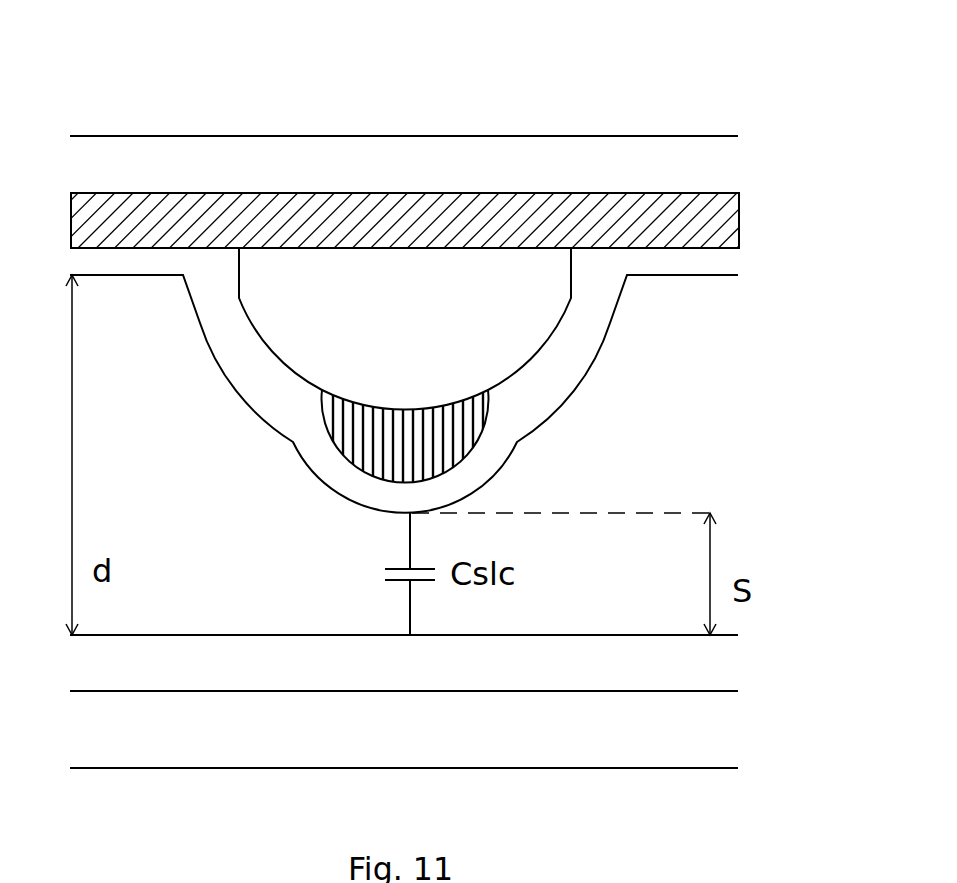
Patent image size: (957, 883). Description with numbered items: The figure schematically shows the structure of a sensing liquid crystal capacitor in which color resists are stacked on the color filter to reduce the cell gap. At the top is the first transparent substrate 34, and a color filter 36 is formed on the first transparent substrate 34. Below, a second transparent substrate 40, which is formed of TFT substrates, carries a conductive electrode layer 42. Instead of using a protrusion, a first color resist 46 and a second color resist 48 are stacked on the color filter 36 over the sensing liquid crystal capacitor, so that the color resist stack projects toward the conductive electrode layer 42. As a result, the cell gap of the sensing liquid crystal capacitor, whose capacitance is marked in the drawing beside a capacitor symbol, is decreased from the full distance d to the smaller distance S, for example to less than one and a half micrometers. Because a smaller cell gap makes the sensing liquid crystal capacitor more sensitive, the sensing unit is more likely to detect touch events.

The first transparent substrate 34 is at (527, 163).
The color filter 36 is at (122, 208).
The second transparent substrate 40 is at (695, 745).
The conductive electrode layer 42 is at (695, 662).
The first color resist 46 is at (388, 320).
The second color resist 48 is at (465, 427).